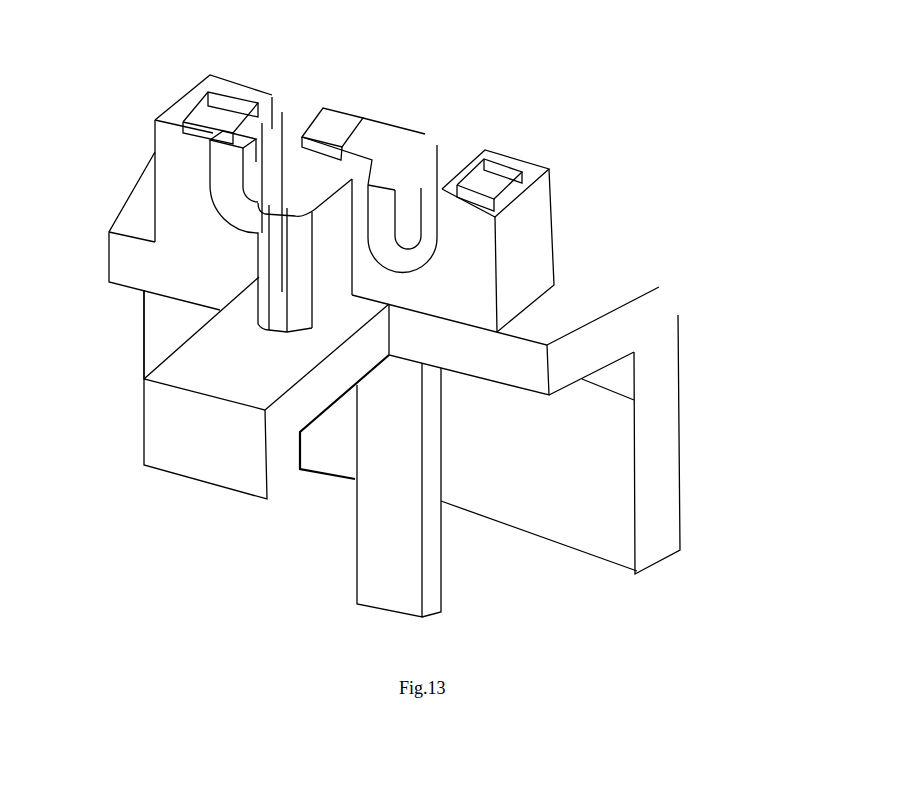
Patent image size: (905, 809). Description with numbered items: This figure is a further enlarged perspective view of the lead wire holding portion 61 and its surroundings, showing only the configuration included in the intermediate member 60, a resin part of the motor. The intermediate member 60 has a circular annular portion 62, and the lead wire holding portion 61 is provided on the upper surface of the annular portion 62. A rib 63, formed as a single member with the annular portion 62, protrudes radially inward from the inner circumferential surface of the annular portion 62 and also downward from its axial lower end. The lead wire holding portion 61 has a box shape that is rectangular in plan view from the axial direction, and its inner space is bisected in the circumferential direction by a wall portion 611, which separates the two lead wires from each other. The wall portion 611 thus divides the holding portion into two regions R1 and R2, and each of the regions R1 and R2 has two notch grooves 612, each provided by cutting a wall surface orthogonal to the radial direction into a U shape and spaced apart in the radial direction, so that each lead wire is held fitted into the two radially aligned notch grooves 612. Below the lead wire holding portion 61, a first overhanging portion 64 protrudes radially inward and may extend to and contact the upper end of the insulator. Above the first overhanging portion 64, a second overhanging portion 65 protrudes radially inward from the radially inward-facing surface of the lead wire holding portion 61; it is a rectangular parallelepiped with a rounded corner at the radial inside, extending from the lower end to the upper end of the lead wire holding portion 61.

The intermediate member 60 is at (542, 354).
The lead wire holding portion 61 is at (530, 235).
The wall portion 611 is at (397, 152).
The notch groove 612 is at (315, 163).
The annular portion 62 is at (665, 382).
The rib 63 is at (400, 553).
The first overhanging portion 64 is at (148, 388).
The second overhanging portion 65 is at (191, 231).
The region R1 is at (171, 61).
The region R2 is at (560, 135).